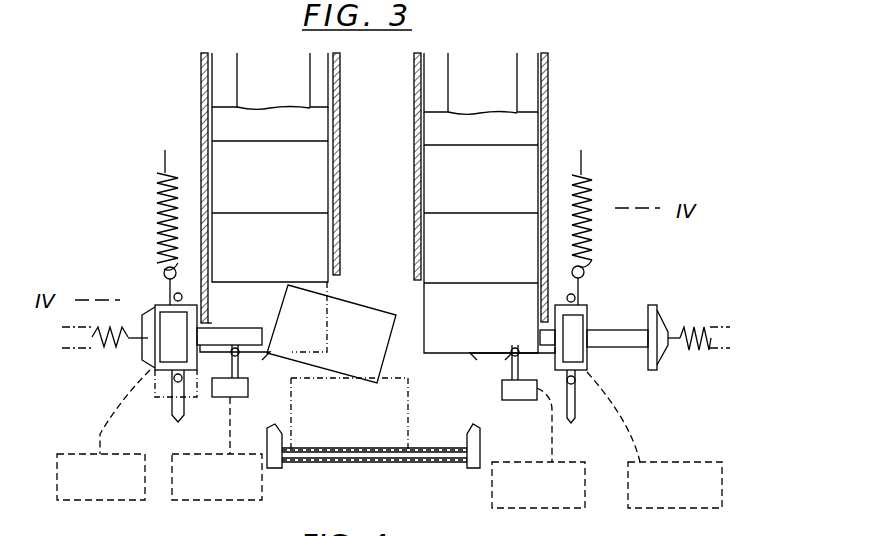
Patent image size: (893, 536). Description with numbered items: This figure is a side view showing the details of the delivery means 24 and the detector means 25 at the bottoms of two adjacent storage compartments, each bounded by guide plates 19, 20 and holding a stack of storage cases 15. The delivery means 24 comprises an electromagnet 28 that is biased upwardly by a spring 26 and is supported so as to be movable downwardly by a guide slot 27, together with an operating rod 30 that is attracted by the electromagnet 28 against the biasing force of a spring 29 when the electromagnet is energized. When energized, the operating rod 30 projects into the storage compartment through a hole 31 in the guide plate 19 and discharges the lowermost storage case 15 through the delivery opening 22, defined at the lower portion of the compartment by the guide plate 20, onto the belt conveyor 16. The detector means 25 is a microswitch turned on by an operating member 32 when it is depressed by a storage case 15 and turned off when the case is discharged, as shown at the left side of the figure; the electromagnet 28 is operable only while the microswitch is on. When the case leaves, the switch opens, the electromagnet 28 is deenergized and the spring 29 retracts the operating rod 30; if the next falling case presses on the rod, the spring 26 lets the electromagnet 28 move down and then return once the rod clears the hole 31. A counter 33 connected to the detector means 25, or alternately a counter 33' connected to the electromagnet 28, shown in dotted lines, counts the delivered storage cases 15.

The storage case 15 is at (318, 240).
The belt conveyor 16 is at (430, 463).
The guide plate 19 is at (201, 88).
The guide plate 20 is at (340, 95).
The storage case delivery opening 22 is at (333, 286).
The delivery means 24 is at (150, 372).
The detector means 25 is at (226, 398).
The spring 26 is at (157, 207).
The guide slot 27 is at (181, 416).
The electromagnet 28 is at (166, 300).
The spring 29 is at (110, 350).
The operating rod 30 is at (249, 330).
The hole 31 is at (213, 326).
The operating member 32 is at (241, 370).
The counter 33 is at (378, 495).
The counter 33' is at (389, 495).